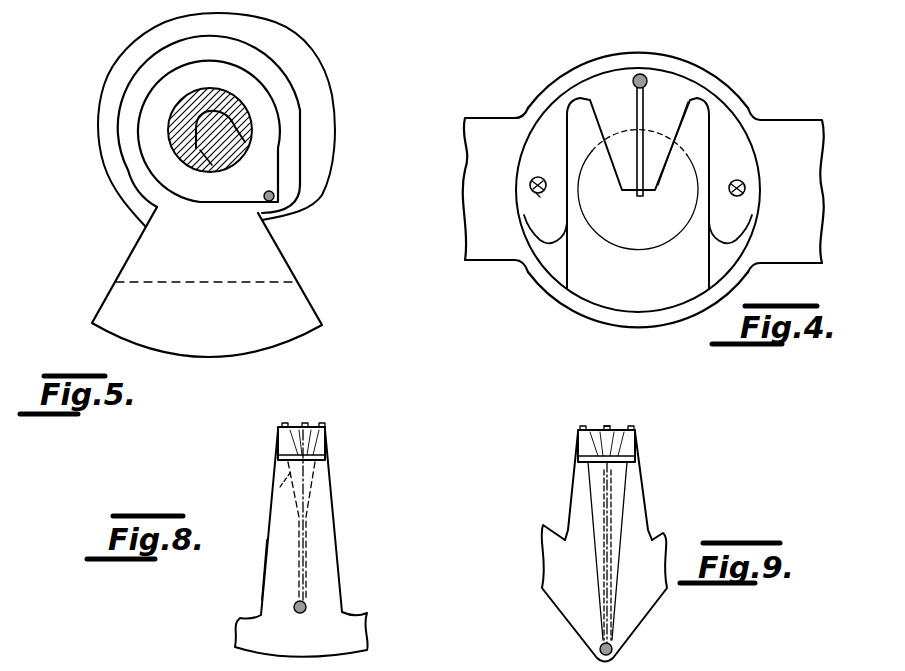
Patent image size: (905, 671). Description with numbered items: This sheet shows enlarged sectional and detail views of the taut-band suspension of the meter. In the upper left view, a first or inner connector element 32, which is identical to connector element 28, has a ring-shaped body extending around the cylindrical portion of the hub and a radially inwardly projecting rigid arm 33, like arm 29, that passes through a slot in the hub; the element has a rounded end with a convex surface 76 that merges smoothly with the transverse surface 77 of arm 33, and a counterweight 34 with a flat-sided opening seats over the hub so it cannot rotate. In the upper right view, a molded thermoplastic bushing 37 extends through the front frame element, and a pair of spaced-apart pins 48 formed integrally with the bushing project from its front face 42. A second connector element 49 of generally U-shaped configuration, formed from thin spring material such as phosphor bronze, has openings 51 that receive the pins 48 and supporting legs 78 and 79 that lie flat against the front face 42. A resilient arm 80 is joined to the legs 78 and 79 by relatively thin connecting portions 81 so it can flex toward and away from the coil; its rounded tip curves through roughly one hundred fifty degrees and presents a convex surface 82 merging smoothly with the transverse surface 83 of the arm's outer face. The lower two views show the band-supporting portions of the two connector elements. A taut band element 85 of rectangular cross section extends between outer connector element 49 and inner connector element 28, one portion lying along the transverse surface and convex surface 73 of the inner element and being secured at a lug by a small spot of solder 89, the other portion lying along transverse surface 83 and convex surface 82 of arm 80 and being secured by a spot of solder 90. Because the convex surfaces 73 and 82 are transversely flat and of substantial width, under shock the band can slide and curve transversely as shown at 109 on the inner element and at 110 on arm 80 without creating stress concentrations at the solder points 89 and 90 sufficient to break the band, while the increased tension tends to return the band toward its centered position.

In FIG. 9, the connector element 28 is at (660, 619).
In FIG. 9, the arm 29 is at (580, 490).
In FIG. 5, the connector element 32 is at (288, 163).
In FIG. 5, the arm 33 is at (238, 122).
In FIG. 5, the counterweight 34 is at (276, 257).
In FIG. 4, the bushing 37 is at (526, 264).
In FIG. 4, the front face 42 is at (553, 260).
In FIG. 4, the pins 48 is at (531, 183).
In FIG. 4, the connector element 49 is at (668, 66).
In FIG. 8, the connector element 49 is at (256, 578).
In FIG. 4, the openings 51 is at (542, 195).
In FIG. 9, the convex surface 73 is at (590, 430).
In FIG. 5, the convex surface 76 is at (196, 118).
In FIG. 5, the transverse surface 77 is at (214, 167).
In FIG. 4, the supporting leg 78 is at (747, 158).
In FIG. 4, the supporting leg 79 is at (533, 160).
In FIG. 4, the arm 80 is at (663, 153).
In FIG. 8, the arm 80 is at (358, 548).
In FIG. 4, the connecting portions 81 is at (572, 95).
In FIG. 4, the convex surface 82 is at (633, 190).
In FIG. 8, the convex surface 82 is at (308, 447).
In FIG. 4, the transverse surface 83 is at (608, 120).
In FIG. 8, the taut band element 85 is at (302, 418).
In FIG. 9, the taut band element 85 is at (606, 418).
In FIG. 9, the solder 89 is at (613, 642).
In FIG. 8, the solder 90 is at (297, 615).
In FIG. 9, the curve of band 109 is at (620, 485).
In FIG. 8, the curve of band 110 is at (280, 487).